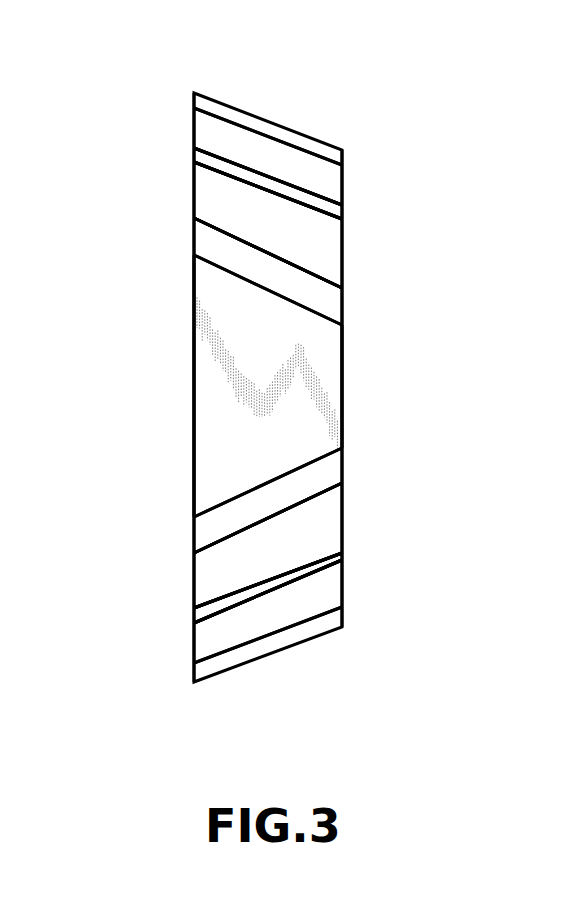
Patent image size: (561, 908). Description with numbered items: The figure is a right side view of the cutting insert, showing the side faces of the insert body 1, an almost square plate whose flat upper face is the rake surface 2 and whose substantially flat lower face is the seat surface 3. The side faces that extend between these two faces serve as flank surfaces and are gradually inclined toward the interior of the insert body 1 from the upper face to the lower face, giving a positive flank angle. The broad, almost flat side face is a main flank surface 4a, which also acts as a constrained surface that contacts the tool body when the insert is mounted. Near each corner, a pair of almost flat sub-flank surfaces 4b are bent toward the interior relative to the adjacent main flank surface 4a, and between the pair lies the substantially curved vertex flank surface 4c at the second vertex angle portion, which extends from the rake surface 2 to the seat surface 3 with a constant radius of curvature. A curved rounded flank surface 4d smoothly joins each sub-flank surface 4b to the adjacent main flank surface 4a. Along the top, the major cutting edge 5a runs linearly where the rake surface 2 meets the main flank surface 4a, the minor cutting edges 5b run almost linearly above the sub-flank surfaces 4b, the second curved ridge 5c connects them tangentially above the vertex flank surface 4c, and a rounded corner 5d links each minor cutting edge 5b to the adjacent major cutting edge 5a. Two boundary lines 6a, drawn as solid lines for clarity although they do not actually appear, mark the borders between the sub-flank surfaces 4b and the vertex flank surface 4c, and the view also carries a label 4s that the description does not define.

The insert body 1 is at (309, 92).
The rake surface 2 is at (194, 327).
The seat surface 3 is at (342, 367).
The main flank surface 4a is at (342, 403).
The sub-flank surface 4b is at (342, 183).
The vertex flank surface 4c is at (342, 215).
The rounded flank surface 4d is at (342, 308).
The positive electrode surface layer 4s is at (342, 470).
The major cutting edge 5a is at (194, 452).
The minor cutting edge 5b is at (194, 132).
The second curved ridge 5c is at (194, 160).
The rounded corner 5d is at (194, 237).
The boundary line 6a is at (194, 212).